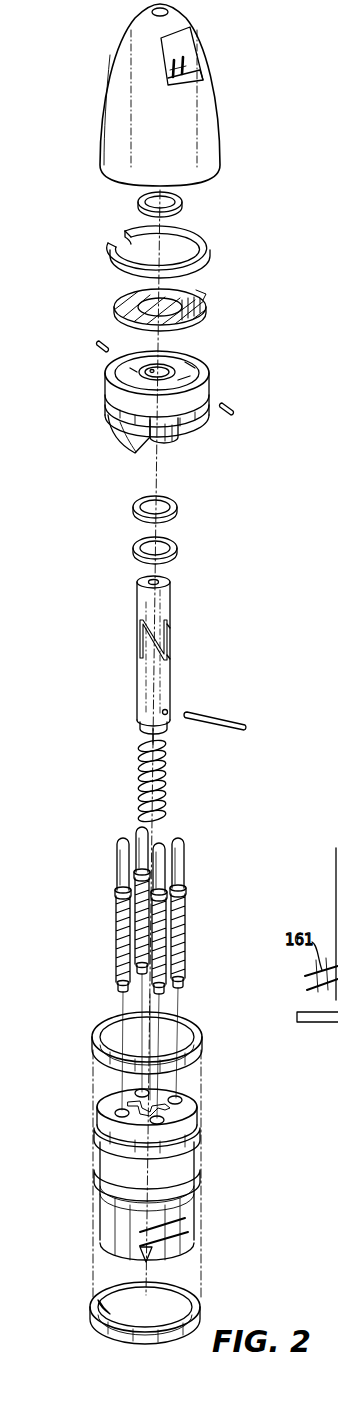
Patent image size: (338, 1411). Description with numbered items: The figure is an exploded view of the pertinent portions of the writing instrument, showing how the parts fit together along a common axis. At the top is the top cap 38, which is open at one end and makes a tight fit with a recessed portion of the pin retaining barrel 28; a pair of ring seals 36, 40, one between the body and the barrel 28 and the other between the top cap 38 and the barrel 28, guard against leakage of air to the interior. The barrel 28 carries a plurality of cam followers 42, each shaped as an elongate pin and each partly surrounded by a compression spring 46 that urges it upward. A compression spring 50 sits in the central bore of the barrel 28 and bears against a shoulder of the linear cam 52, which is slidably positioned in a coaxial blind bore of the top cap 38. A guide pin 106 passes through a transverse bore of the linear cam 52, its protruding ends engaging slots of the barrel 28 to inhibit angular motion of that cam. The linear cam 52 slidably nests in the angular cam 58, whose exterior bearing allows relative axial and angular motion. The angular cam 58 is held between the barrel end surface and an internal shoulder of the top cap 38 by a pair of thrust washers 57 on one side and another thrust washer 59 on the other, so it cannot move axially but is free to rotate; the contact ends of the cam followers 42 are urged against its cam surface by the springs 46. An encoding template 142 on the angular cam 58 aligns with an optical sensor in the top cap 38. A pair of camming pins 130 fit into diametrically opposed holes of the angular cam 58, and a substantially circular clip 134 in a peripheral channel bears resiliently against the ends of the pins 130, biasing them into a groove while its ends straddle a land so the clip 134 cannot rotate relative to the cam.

The top cap 38 is at (206, 135).
The thrust washer 59 is at (183, 198).
The clip 134 is at (209, 243).
The encoding template 142 is at (205, 312).
The angular cam 58 is at (212, 372).
The camming pins 130 is at (96, 346).
The thrust washers 57 is at (176, 546).
The linear cam 52 is at (174, 601).
The guide pin 106 is at (218, 715).
The compression spring 50 is at (166, 767).
The cam followers 42 is at (140, 845).
The compression springs 46 is at (122, 927).
The ring seal 40 is at (96, 1032).
The pin retaining barrel 28 is at (96, 1112).
The ring seal 36 is at (94, 1297).